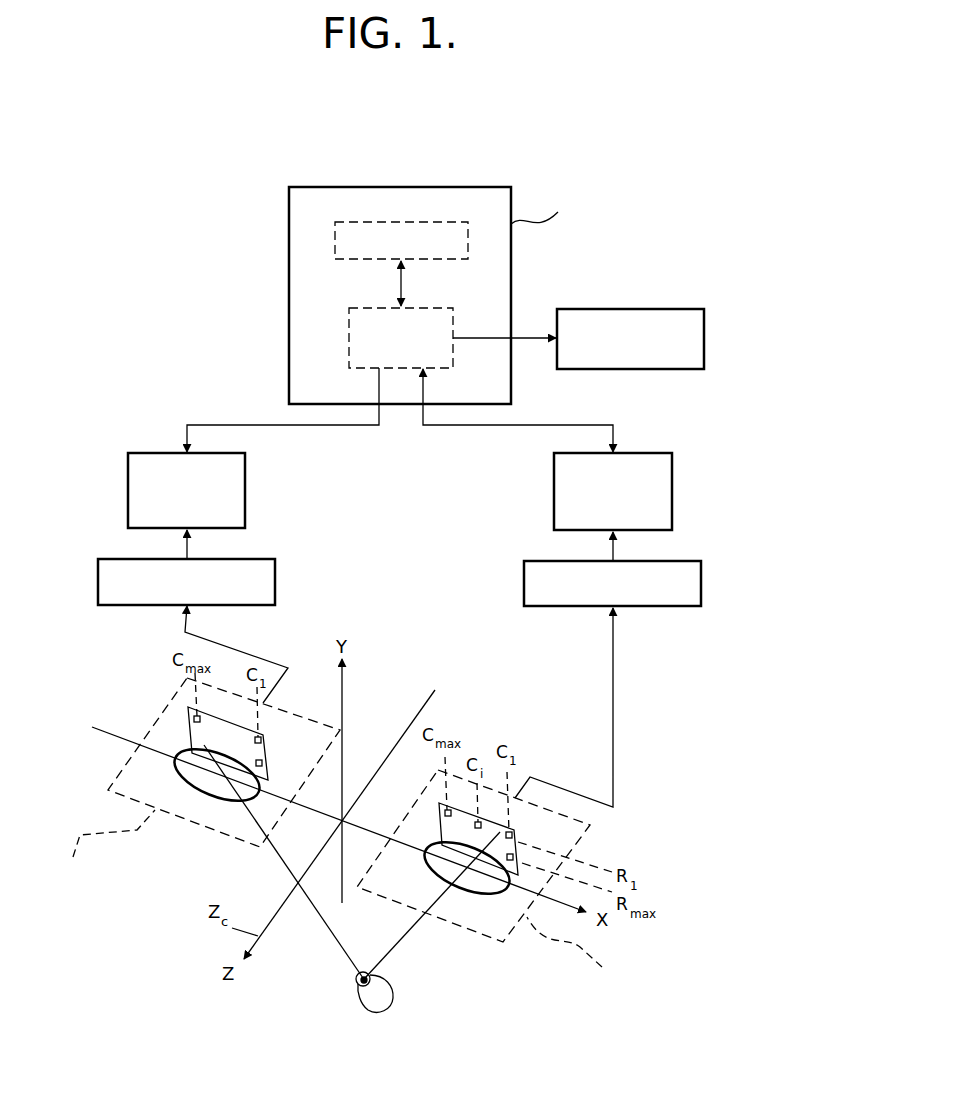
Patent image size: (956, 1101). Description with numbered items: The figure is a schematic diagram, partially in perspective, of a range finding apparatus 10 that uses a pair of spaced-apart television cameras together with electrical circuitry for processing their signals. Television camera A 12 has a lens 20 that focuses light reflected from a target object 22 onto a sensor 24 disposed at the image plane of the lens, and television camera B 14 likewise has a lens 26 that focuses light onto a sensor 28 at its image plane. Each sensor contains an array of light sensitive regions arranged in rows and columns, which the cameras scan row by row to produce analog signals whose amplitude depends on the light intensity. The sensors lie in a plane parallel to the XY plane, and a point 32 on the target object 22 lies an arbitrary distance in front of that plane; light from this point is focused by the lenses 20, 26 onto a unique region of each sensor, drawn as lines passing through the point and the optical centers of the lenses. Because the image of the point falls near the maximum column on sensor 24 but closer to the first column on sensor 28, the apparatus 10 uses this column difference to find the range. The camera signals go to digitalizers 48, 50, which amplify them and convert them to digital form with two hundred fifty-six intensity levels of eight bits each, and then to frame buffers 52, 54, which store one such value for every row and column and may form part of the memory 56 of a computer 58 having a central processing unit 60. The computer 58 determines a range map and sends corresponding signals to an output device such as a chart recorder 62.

The range finding apparatus 10 is at (195, 170).
The television camera A 12 is at (133, 753).
The television camera B 14 is at (582, 833).
The lens 20 is at (229, 797).
The target object 22 is at (392, 1003).
The sensor 24 is at (190, 740).
The lens 26 is at (477, 897).
The sensor 28 is at (440, 842).
The point 32 is at (357, 983).
The digitalizer 48 is at (275, 581).
The digitalizer 50 is at (524, 582).
The frame buffer 52 is at (245, 488).
The frame buffer 54 is at (554, 490).
The memory 56 is at (335, 240).
The computer 58 is at (511, 273).
The central processing unit 60 is at (349, 333).
The chart recorder 62 is at (645, 369).